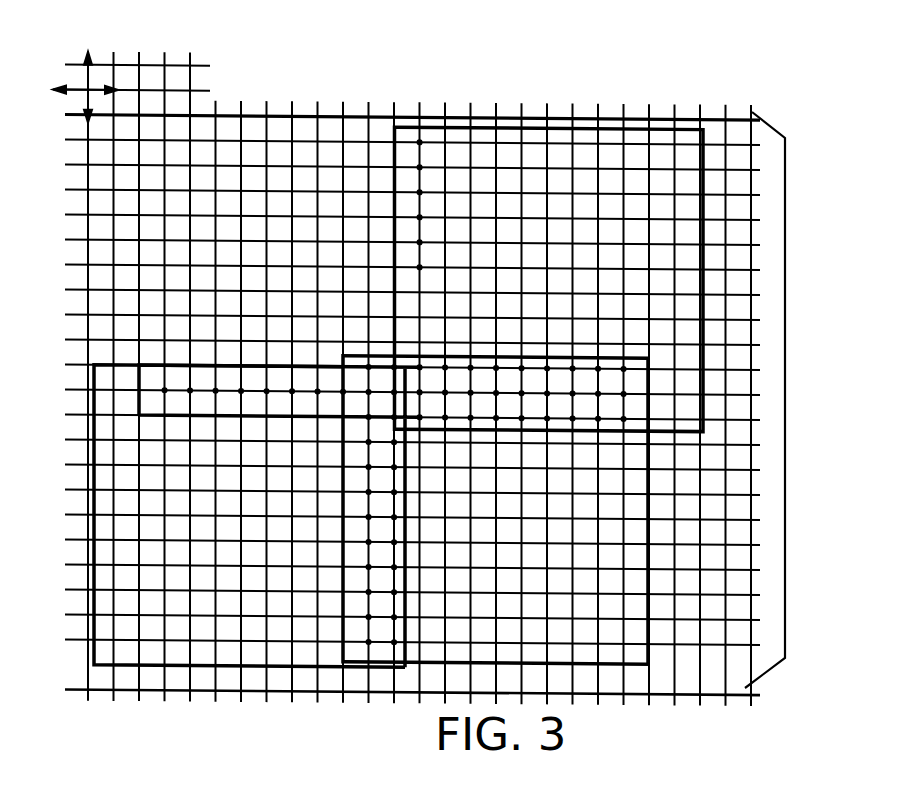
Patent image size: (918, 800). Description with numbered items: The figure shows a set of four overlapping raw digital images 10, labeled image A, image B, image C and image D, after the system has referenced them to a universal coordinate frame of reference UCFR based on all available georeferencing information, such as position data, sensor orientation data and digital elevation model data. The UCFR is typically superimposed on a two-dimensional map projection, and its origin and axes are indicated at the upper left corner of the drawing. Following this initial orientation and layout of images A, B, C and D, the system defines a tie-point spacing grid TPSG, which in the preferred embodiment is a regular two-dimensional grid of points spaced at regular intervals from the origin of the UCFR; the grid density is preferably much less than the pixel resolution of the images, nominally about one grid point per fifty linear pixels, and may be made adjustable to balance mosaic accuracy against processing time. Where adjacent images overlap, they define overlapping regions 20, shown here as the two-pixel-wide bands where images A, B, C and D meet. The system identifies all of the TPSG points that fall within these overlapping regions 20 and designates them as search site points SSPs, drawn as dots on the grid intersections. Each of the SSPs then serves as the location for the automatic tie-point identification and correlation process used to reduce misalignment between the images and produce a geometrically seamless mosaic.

The digital images 10 is at (785, 372).
The image A is at (275, 116).
The image B is at (603, 128).
The image C is at (648, 582).
The image D is at (230, 670).
The overlapping regions 20 is at (450, 90).
The search site points SSPs is at (420, 243).
The universal coordinate frame of reference UCFR is at (90, 79).
The tie-point spacing grid TPSG is at (680, 653).